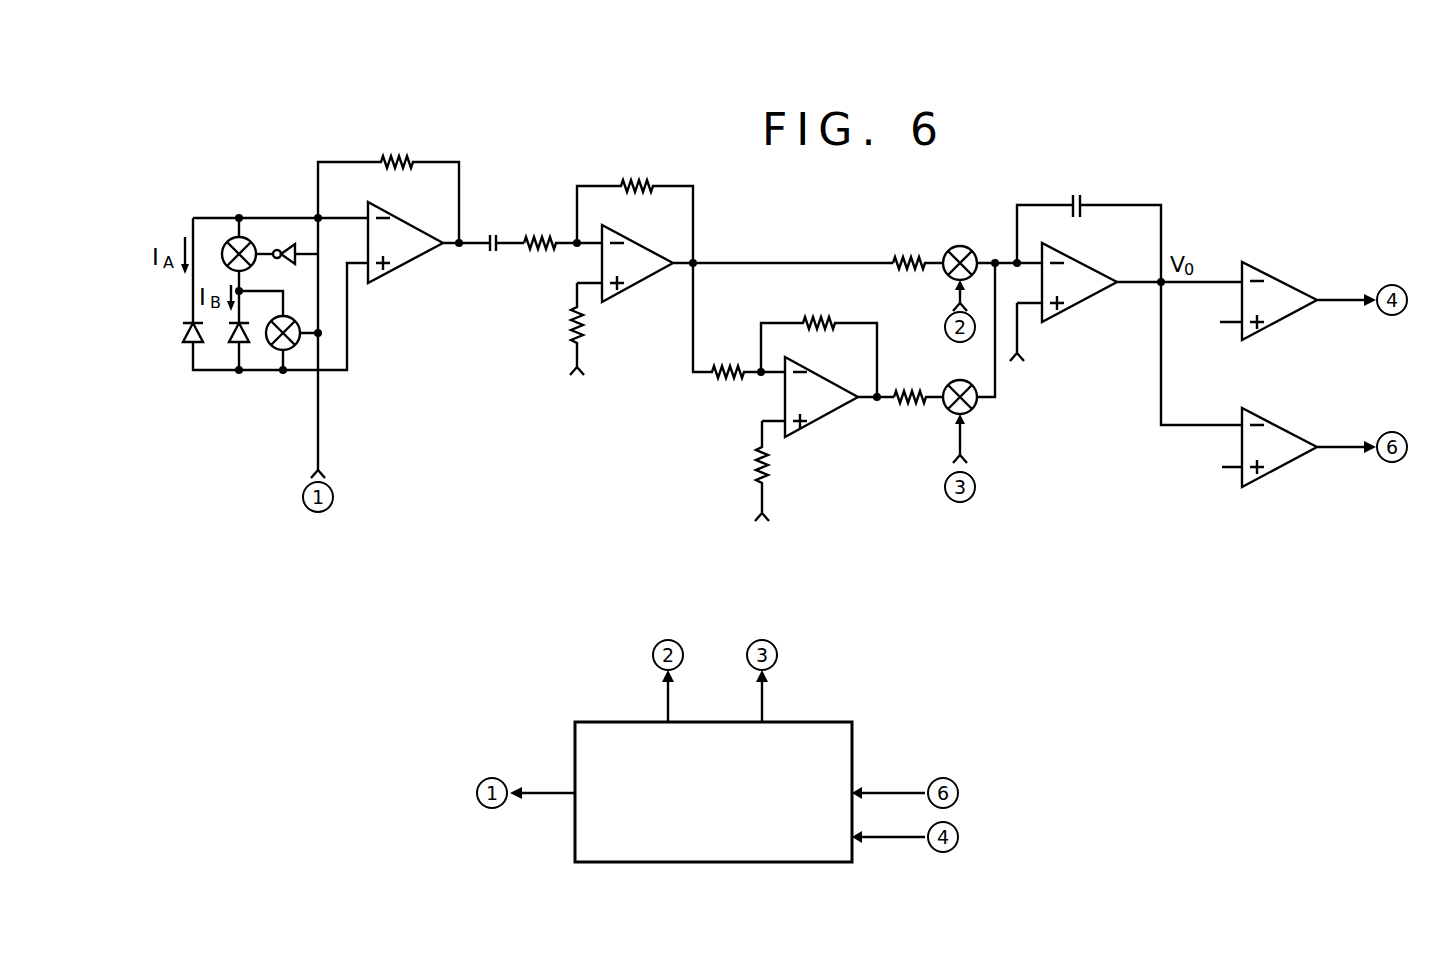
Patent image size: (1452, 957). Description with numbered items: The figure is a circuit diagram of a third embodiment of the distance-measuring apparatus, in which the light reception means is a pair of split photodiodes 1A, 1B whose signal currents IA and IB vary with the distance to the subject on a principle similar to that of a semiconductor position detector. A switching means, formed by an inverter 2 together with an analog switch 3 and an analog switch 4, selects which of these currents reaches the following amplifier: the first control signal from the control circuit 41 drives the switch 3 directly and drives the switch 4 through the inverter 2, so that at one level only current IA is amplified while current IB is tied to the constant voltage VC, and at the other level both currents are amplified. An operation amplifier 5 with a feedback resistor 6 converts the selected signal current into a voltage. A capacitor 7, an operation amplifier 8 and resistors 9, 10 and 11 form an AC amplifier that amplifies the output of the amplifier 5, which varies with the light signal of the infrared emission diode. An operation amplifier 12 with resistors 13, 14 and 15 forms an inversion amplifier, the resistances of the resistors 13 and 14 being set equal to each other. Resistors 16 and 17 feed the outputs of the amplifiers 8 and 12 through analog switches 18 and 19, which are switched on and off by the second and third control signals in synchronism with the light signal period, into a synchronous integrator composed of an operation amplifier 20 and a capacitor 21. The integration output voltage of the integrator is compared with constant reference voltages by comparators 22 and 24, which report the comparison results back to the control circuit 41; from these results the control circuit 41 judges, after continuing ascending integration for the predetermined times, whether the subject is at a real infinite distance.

The split photodiode 1A is at (184, 338).
The split photodiode 1B is at (229, 338).
The inverter 2 is at (288, 246).
The analog switch 3 is at (272, 345).
The analog switch 4 is at (232, 246).
The operation amplifier 5 is at (410, 262).
The resistor 6 is at (400, 158).
The capacitor 7 is at (492, 232).
The operation amplifier 8 is at (634, 291).
The resistor 9 is at (538, 250).
The resistor 10 is at (640, 180).
The resistor 11 is at (568, 328).
The operation amplifier 12 is at (818, 426).
The resistor 13 is at (722, 378).
The resistor 14 is at (821, 320).
The resistor 15 is at (752, 470).
The resistor 16 is at (907, 250).
The resistor 17 is at (910, 405).
The analog switch 18 is at (968, 246).
The analog switch 19 is at (950, 385).
The operation amplifier 20 is at (1077, 306).
The capacitor 21 is at (1080, 190).
The comparator 22 is at (1283, 280).
The comparator 24 is at (1288, 428).
The control circuit 41 is at (708, 864).